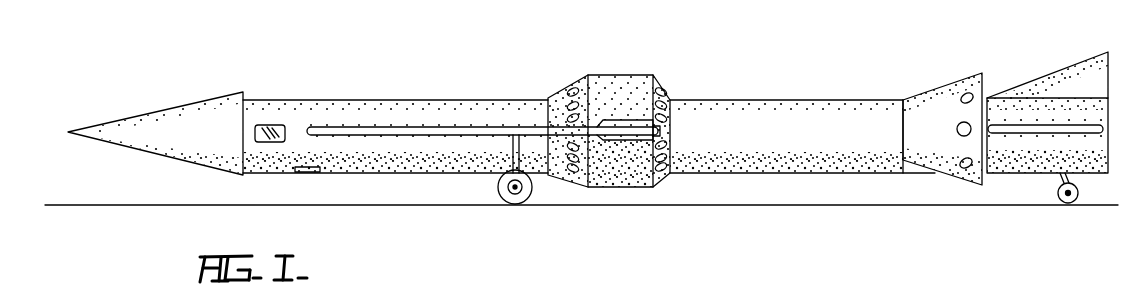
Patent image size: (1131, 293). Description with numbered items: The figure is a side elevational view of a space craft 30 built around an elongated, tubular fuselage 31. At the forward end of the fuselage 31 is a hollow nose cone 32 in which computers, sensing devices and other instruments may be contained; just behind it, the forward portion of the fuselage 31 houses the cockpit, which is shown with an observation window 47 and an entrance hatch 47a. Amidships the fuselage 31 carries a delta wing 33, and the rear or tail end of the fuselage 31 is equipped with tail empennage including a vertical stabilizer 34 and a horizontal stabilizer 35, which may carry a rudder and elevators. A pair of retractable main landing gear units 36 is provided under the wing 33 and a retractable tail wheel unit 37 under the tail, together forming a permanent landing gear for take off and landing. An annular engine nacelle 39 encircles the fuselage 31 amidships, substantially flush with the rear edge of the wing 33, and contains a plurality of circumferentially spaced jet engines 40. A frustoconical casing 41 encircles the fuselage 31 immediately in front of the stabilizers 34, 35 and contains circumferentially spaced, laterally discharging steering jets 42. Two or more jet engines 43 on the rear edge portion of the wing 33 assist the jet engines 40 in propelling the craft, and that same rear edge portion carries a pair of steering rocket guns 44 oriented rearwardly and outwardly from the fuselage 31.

The space craft 30 is at (787, 92).
The fuselage 31 is at (488, 100).
The nose cone 32 is at (158, 112).
The delta wing 33 is at (397, 127).
The vertical stabilizer 34 is at (1068, 67).
The horizontal stabilizer 35 is at (1030, 125).
The main landing gear unit 36 is at (518, 207).
The tail wheel unit 37 is at (1063, 203).
The annular engine nacelle 39 is at (610, 75).
The jet engine 40 is at (665, 98).
The frustoconical casing 41 is at (927, 103).
The steering jet 42 is at (965, 172).
The jet engine 43 is at (625, 120).
The steering rocket gun 44 is at (660, 131).
The observation window 47 is at (268, 130).
The entrance hatch 47a is at (307, 173).